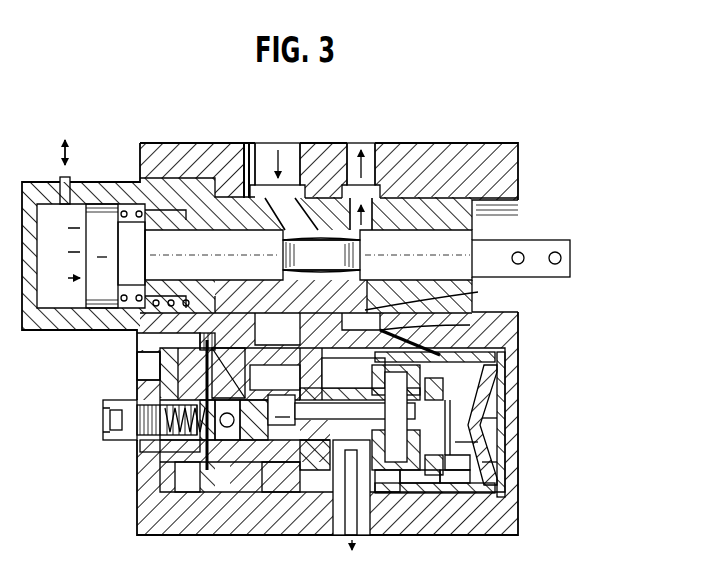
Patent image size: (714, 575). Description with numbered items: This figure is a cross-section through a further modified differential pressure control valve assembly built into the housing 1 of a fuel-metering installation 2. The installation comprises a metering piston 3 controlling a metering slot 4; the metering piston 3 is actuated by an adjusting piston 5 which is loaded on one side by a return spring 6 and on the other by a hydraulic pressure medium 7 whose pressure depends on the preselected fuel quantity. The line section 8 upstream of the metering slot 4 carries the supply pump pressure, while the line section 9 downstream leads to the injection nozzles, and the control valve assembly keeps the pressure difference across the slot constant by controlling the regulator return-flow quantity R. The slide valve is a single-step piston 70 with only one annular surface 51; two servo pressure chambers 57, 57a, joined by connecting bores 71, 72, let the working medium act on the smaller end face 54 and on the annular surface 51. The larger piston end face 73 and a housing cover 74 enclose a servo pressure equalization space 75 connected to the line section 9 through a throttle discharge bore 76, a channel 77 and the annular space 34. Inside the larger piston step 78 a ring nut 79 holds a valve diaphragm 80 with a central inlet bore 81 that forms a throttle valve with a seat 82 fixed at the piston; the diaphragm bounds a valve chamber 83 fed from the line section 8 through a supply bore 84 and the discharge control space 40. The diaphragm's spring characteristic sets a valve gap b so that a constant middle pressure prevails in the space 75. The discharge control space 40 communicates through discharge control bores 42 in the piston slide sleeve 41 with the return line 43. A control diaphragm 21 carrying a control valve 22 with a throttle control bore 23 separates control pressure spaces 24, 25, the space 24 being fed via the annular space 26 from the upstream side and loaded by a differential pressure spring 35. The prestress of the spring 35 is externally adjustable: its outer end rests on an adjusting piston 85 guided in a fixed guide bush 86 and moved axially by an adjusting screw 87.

The housing 1 is at (520, 144).
The fuel-metering installation 2 is at (478, 236).
The metering piston 3 is at (397, 257).
The metering slot 4 is at (358, 240).
The adjusting piston 5 is at (102, 256).
The return spring 6 is at (128, 215).
The hydraulic pressure medium 7 is at (80, 228).
The line section 8 is at (290, 146).
The line section 9 is at (366, 146).
The annular space 26 is at (252, 150).
The annular space 34 is at (432, 296).
The channel 77 is at (440, 335).
The control pressure space 25 is at (200, 345).
The fixed guide bush 86 is at (138, 378).
The adjusting screw 87 is at (104, 416).
The differential pressure spring 35 is at (170, 440).
The adjusting piston 85 is at (165, 452).
The control bore 23 is at (165, 480).
The control diaphragm 21 is at (207, 470).
The control pressure space 24 is at (225, 462).
The end face 54 is at (250, 462).
The piston slide sleeve 41 is at (268, 440).
The discharge control space 40 is at (300, 462).
The single-step piston 70 is at (283, 492).
The connecting bore 71 is at (310, 470).
The return line 43 is at (325, 440).
The regulator return-flow quantity R is at (352, 540).
The discharge control bores 42 is at (353, 373).
The control valve 22 is at (262, 392).
The servo pressure chamber 57 is at (281, 410).
The connecting bore 72 is at (366, 490).
The servo pressure chamber 57a is at (388, 492).
The annular surface 51 is at (415, 470).
The valve chamber 83 is at (420, 483).
The seat 82 is at (450, 483).
The larger piston step 78 is at (465, 470).
The supply bore 84 is at (444, 396).
The valve gap b is at (453, 427).
The housing cover 74 is at (495, 400).
The inlet bore 81 is at (490, 422).
The valve diaphragm 80 is at (470, 442).
The servo pressure equalization space 75 is at (492, 462).
The ring nut 79 is at (492, 486).
The throttle discharge bore 76 is at (500, 358).
The piston end face 73 is at (492, 362).